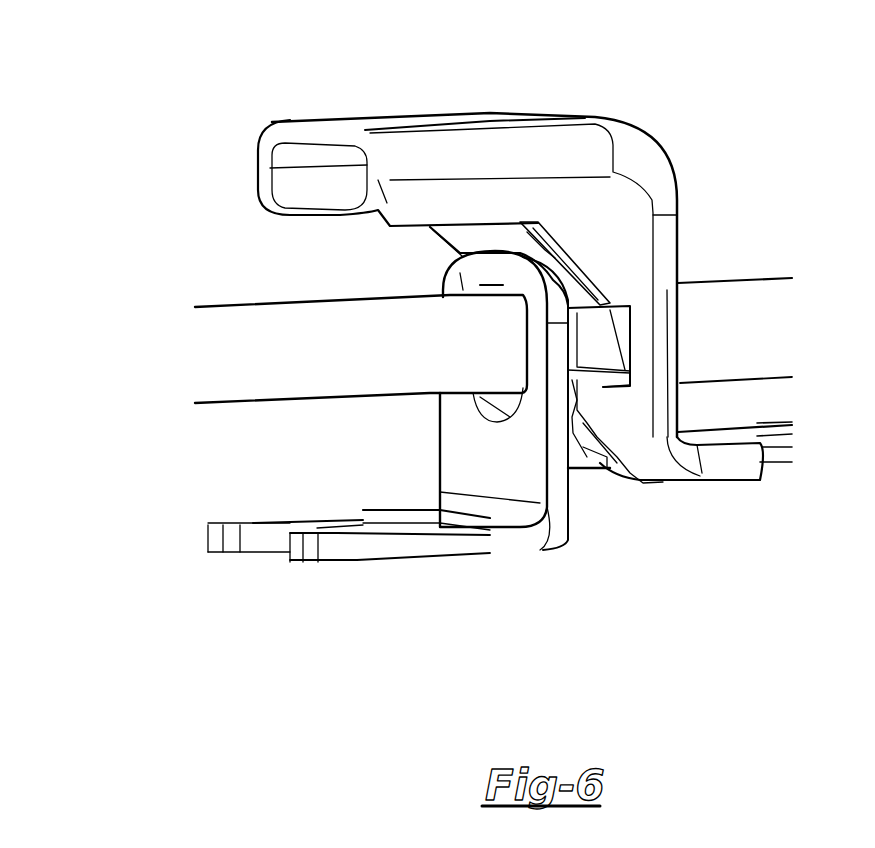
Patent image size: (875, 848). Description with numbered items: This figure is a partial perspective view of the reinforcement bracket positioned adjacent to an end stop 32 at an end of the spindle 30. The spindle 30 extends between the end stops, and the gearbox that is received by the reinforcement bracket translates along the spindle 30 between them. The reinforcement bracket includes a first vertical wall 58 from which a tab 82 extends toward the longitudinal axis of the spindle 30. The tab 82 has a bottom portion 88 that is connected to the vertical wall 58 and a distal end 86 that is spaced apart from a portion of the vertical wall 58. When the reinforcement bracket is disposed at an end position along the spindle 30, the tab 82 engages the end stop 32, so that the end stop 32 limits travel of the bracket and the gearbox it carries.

The spindle 30 is at (240, 333).
The end stop 32 is at (493, 452).
The first vertical wall 58 is at (633, 417).
The tab 82 is at (603, 347).
The distal end 86 is at (520, 217).
The bottom portion 88 is at (603, 390).